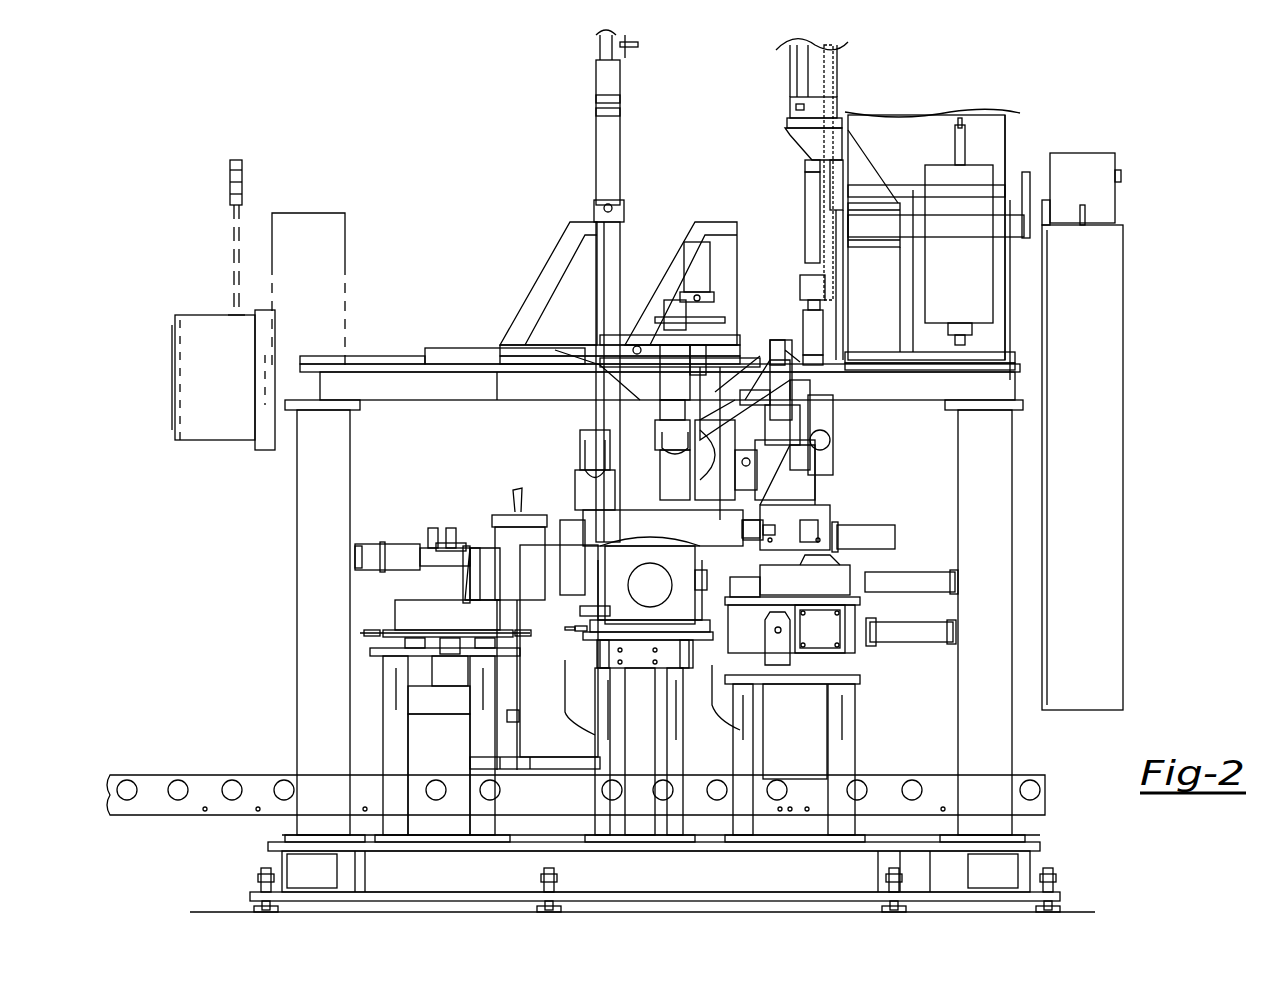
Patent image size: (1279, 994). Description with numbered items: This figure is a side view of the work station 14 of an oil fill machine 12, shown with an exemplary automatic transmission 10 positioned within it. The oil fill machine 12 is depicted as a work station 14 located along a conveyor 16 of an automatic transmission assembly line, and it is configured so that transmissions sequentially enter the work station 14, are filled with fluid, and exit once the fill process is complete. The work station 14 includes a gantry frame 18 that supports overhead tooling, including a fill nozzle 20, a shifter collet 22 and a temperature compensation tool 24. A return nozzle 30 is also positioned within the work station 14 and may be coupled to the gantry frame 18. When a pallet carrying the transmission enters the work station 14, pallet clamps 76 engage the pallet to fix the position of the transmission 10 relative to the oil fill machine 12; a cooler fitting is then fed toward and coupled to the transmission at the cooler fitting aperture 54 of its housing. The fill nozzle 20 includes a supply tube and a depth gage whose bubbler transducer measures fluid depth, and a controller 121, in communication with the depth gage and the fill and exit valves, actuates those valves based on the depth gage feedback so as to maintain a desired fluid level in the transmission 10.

The automatic transmission 10 is at (582, 597).
The oil fill machine 12 is at (562, 477).
The work station 14 is at (434, 245).
The conveyor 16 is at (210, 788).
The gantry frame 18 is at (360, 380).
The fill nozzle 20 is at (598, 548).
The shifter collet 22 is at (660, 432).
The temperature compensation tool 24 is at (598, 445).
The return nozzle 30 is at (780, 598).
The cooler fitting aperture 54 is at (708, 590).
The pallet clamps 76 is at (463, 545).
The controller 121 is at (210, 328).